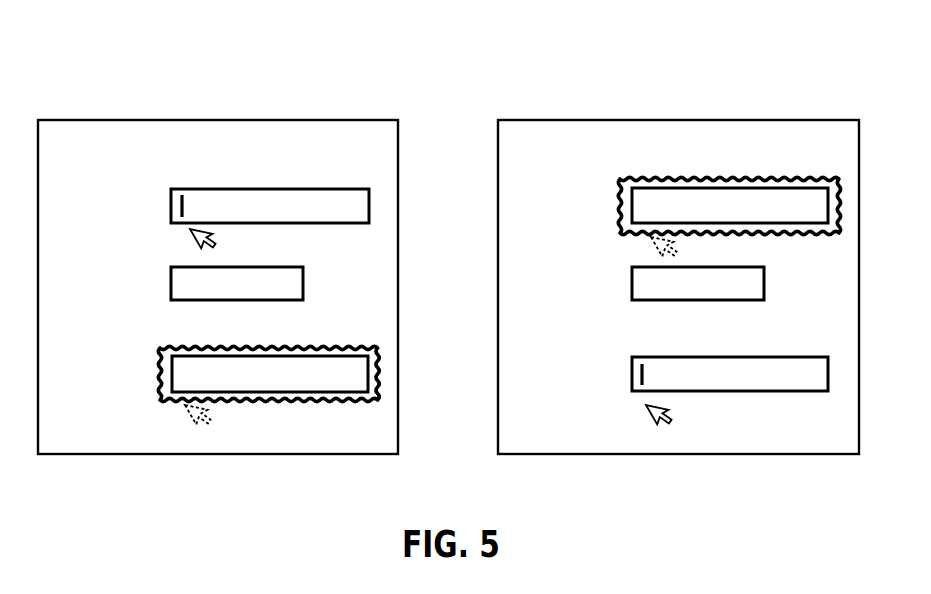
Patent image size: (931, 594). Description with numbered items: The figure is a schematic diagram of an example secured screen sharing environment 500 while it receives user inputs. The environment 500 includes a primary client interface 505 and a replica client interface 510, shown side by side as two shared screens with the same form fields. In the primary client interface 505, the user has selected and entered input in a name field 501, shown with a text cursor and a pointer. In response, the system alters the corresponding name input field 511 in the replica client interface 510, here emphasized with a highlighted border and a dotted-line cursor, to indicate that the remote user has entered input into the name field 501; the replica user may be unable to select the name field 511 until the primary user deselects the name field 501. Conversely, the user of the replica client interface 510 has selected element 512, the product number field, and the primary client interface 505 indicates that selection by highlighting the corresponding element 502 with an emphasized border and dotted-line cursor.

The secured screen sharing environment 500 is at (470, 26).
The primary client interface 505 is at (129, 78).
The replica client interface 510 is at (589, 78).
The name field 501 is at (184, 205).
The corresponding element 502 is at (343, 346).
The corresponding name input field 511 is at (778, 178).
The element 512 is at (645, 372).